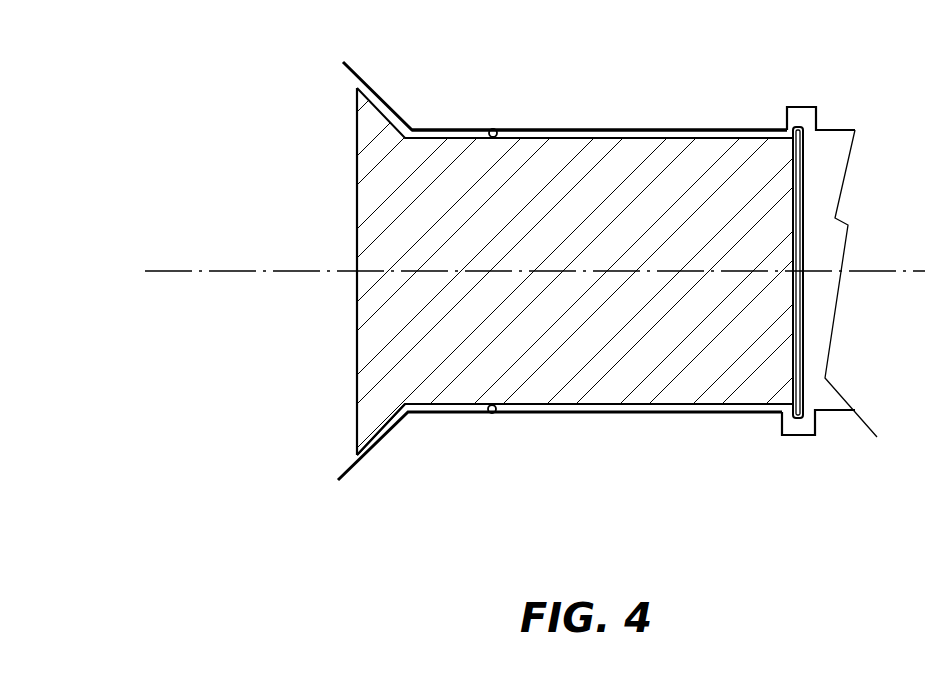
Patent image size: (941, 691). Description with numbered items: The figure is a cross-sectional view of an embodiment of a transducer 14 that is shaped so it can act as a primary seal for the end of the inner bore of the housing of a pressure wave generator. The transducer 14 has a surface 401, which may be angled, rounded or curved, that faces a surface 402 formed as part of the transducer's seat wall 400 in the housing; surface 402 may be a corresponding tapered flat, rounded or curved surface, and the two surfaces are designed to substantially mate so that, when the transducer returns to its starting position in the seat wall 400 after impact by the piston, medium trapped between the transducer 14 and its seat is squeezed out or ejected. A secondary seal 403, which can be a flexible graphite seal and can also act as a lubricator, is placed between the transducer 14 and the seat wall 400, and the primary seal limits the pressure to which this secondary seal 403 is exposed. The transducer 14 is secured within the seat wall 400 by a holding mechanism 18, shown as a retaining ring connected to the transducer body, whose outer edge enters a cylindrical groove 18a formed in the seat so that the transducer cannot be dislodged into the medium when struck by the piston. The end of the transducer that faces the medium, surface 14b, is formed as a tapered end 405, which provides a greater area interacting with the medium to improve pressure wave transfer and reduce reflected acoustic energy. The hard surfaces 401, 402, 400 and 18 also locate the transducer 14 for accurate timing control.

The transducer 14 is at (683, 173).
The transducer surface facing the medium 14b is at (357, 170).
The holding mechanism 18 is at (800, 145).
The groove 18a is at (805, 105).
The seat wall 400 is at (622, 127).
The transducer surface 401 is at (381, 110).
The seat wall surface 402 is at (357, 74).
The secondary seal 403 is at (497, 128).
The tapered end 405 is at (375, 410).